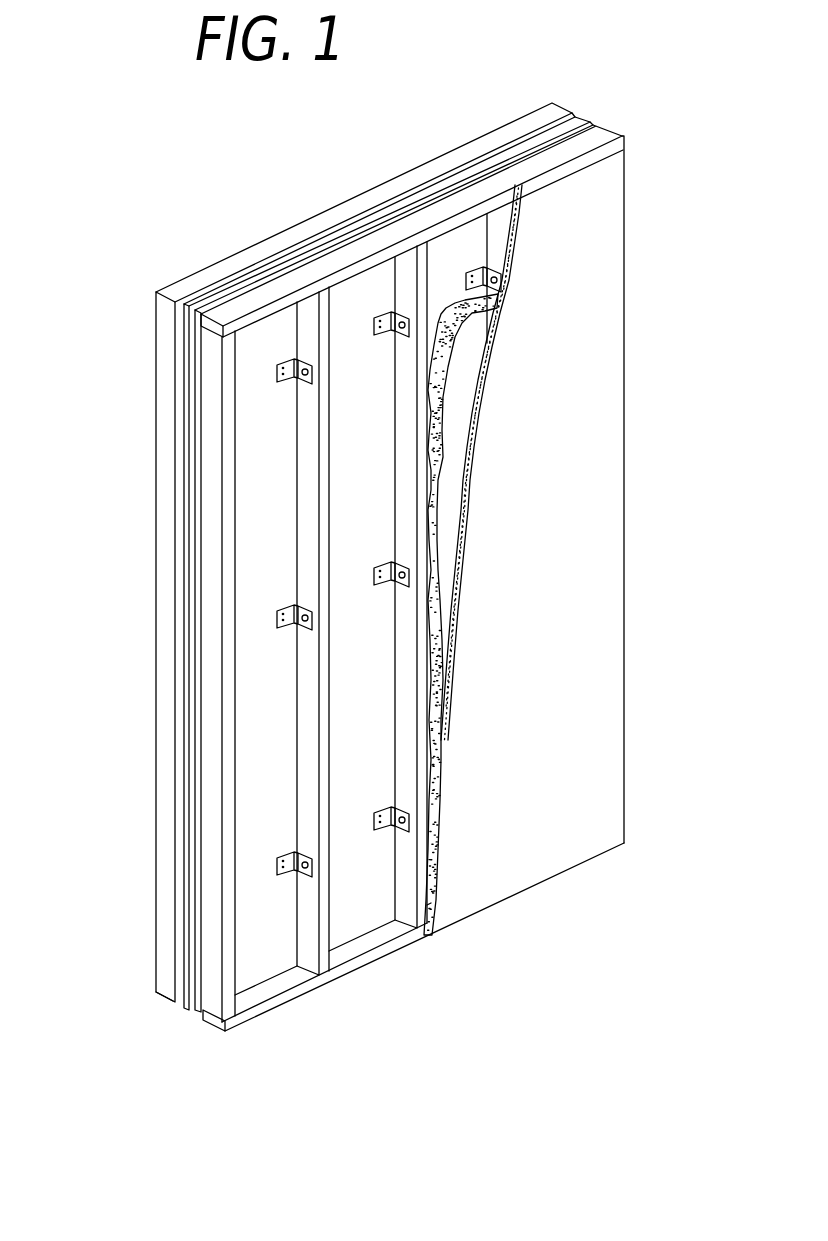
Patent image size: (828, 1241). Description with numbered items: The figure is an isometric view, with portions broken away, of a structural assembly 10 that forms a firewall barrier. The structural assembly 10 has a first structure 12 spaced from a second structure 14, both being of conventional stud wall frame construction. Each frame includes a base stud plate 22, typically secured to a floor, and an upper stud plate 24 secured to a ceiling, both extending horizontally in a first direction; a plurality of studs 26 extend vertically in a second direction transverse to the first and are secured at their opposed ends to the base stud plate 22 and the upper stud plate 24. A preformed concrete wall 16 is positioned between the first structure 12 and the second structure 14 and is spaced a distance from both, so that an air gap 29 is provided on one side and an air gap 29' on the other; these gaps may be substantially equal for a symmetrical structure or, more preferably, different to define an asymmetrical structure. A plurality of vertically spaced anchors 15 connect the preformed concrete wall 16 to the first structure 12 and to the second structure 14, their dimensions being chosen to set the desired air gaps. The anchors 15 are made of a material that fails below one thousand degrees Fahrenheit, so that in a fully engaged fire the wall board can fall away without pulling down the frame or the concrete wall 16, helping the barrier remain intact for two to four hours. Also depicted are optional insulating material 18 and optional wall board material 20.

The structural assembly 10 is at (372, 588).
The first structure 12 is at (210, 1000).
The second structure 14 is at (160, 870).
The anchors 15 is at (290, 600).
The preformed concrete wall 16 is at (255, 432).
The insulating material 18 is at (465, 358).
The wall board material 20 is at (555, 568).
The base stud plate 22 is at (378, 957).
The upper stud plate 24 is at (172, 300).
The studs 26 is at (323, 556).
The air gap 29 is at (412, 231).
The air gap 29' is at (389, 203).